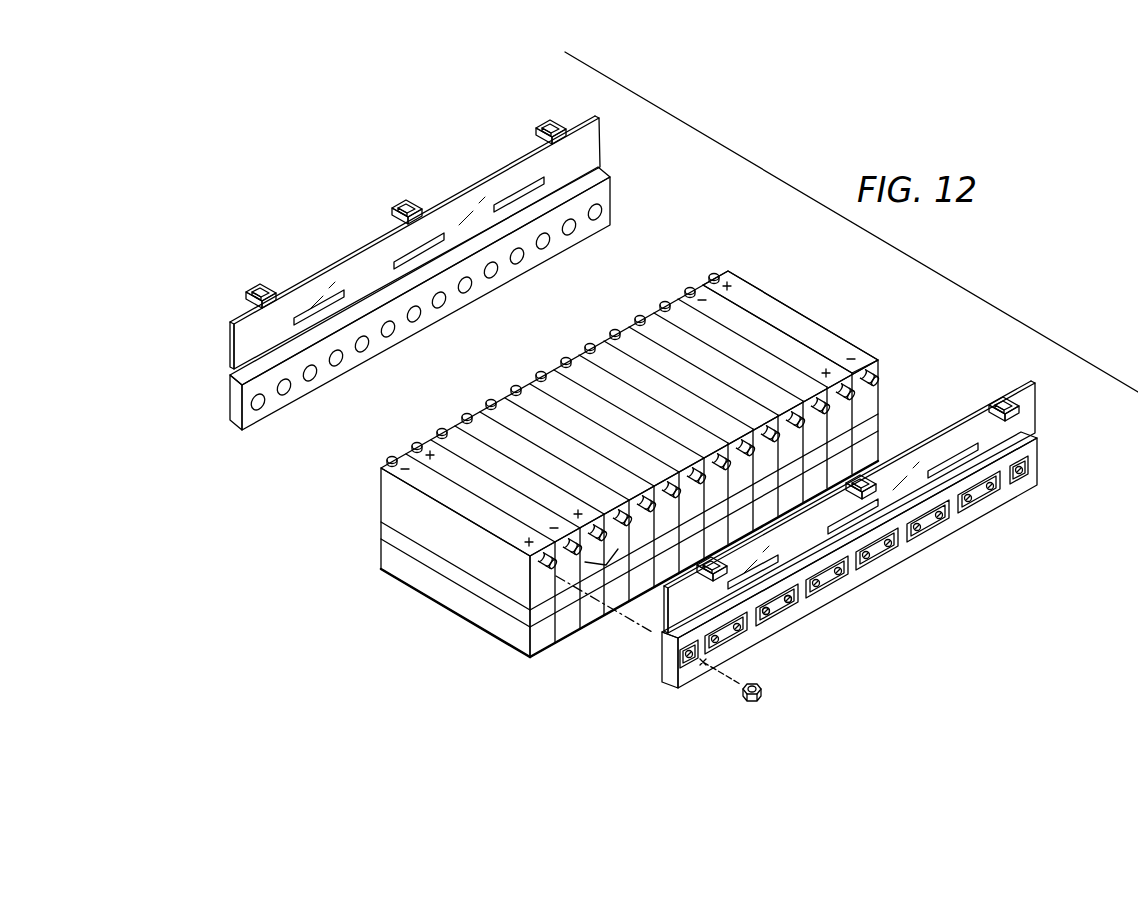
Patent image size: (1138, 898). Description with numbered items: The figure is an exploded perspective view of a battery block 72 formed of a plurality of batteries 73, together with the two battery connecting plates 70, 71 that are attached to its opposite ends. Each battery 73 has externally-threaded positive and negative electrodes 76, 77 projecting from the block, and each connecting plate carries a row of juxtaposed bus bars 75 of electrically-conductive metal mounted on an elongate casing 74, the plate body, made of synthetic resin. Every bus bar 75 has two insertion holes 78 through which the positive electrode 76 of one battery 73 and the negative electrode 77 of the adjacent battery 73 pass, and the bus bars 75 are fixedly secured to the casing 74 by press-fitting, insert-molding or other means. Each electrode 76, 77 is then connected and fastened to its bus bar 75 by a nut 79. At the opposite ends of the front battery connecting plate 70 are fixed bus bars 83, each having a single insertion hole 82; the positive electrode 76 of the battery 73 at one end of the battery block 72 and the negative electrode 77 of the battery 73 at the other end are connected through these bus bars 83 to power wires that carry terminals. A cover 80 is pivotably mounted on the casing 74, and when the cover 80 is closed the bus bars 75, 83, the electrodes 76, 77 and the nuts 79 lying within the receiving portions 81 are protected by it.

The battery connecting plate 70 is at (901, 549).
The battery connecting plate 71 is at (622, 198).
The battery block 72 is at (630, 460).
The battery 73 is at (828, 342).
The casing 74 is at (275, 405).
The bus bar 75 is at (792, 605).
The positive electrode 76 is at (618, 550).
The negative electrode 77 is at (530, 556).
The insertion hole 78 is at (797, 598).
The nut 79 is at (762, 690).
The cover 80 is at (229, 341).
The receiving portion 81 is at (735, 638).
The insertion hole 82 is at (1030, 467).
The bus bar 83 is at (1023, 478).